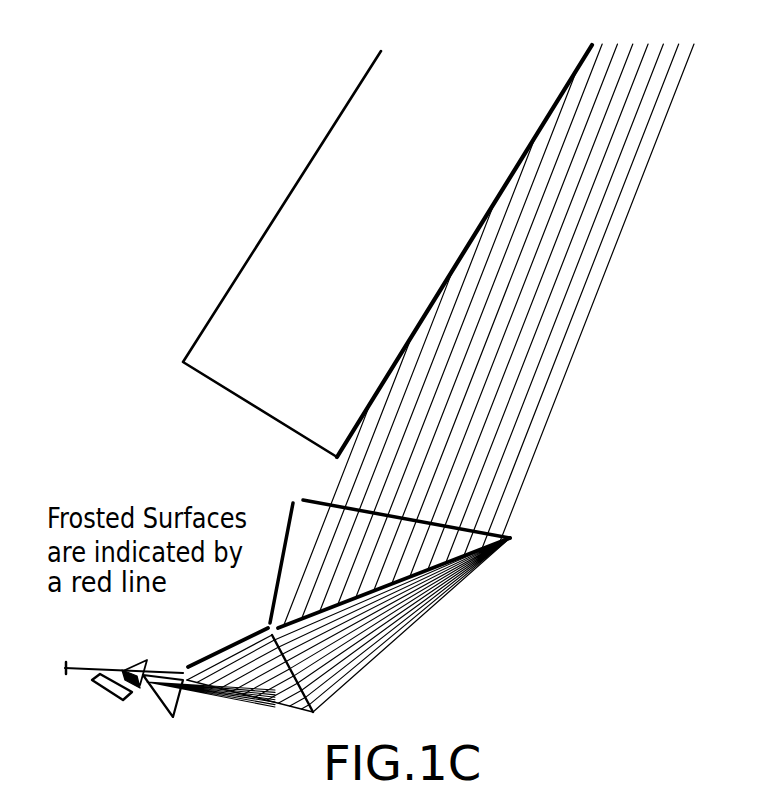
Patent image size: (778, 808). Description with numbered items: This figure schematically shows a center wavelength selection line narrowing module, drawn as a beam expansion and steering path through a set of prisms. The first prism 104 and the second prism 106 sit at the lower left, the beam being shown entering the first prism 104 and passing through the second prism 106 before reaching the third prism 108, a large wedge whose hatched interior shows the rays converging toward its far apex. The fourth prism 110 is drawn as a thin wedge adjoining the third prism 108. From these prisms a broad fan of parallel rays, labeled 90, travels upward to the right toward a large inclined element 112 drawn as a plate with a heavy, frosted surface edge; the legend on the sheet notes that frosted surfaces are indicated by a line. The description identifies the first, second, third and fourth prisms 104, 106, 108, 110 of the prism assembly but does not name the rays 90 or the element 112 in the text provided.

The light beam 90 is at (553, 393).
The first prism 104 is at (110, 678).
The second prism 106 is at (163, 680).
The third prism 108 is at (318, 706).
The fourth prism 110 is at (315, 512).
The display panel 112 is at (306, 228).